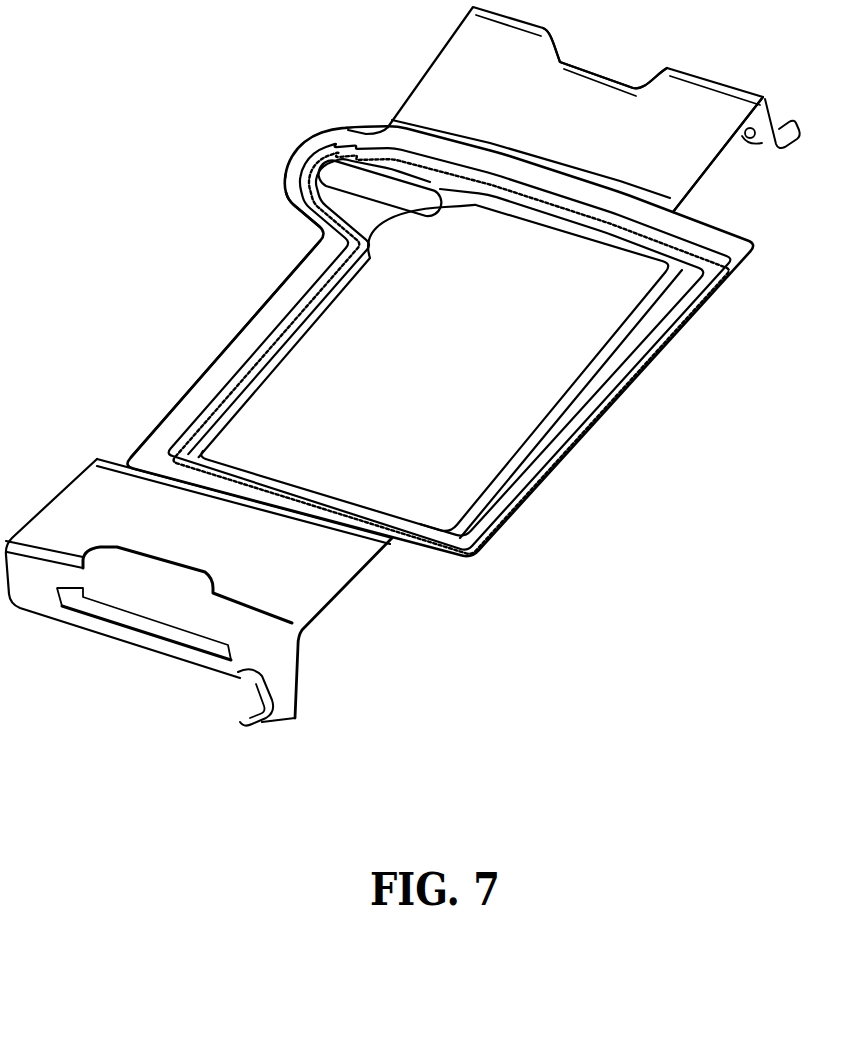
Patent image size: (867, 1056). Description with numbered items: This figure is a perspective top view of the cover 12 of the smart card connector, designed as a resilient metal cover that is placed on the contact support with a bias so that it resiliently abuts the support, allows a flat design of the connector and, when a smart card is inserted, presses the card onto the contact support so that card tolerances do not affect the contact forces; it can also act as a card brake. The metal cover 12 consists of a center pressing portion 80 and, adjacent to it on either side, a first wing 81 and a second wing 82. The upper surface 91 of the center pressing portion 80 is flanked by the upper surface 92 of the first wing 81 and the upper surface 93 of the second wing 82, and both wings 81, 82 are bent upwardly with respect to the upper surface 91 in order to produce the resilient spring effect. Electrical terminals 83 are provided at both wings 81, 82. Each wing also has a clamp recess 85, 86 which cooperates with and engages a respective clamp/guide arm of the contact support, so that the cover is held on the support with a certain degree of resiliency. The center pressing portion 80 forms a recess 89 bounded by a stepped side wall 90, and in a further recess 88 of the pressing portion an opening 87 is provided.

The cover 12 is at (208, 286).
The center pressing portion 80 is at (622, 418).
The first wing 81 is at (358, 593).
The second wing 82 is at (724, 179).
The electrical terminals 83 is at (787, 122).
The clamp recess 85 is at (104, 614).
The clamp recess 86 is at (568, 62).
The opening 87 is at (405, 214).
The recess 88 is at (306, 222).
The recess 89 is at (252, 414).
The stepped side wall 90 is at (247, 374).
The upper surface of the center pressing portion 91 is at (180, 421).
The upper surface of the first wing 92 is at (75, 502).
The upper surface of the second wing 93 is at (437, 82).